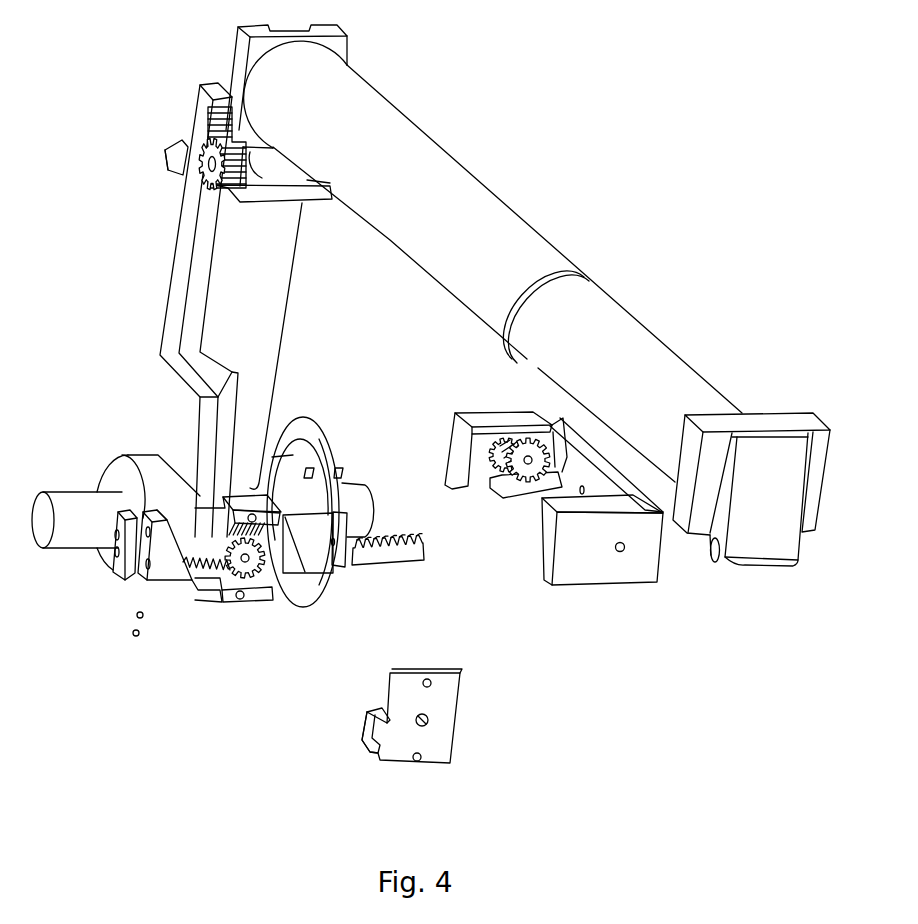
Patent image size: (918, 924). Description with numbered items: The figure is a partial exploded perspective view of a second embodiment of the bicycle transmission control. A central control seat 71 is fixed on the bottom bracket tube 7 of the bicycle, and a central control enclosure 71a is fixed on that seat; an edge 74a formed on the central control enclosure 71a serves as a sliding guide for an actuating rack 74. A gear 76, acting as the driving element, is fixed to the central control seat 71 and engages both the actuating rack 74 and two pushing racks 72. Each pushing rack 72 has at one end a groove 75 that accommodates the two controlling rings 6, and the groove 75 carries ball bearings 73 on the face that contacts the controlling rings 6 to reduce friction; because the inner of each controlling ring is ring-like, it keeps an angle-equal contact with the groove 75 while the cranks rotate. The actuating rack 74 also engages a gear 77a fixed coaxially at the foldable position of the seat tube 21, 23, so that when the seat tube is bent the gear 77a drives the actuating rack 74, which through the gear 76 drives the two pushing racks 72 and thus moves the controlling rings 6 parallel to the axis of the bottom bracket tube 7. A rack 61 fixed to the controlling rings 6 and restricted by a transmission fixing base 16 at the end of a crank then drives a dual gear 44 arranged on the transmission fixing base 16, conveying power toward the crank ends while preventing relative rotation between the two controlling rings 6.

The seat tube 21 is at (475, 208).
The seat tube 23 is at (265, 318).
The actuating rack 74 is at (183, 250).
The gear 77a is at (207, 150).
The controlling ring 6 is at (312, 430).
The bottom bracket tube 7 is at (148, 468).
The groove 75 is at (150, 567).
The ball bearings 73 is at (133, 633).
The pushing rack 72 is at (163, 567).
The central control seat 71 is at (259, 596).
The gear 76 is at (243, 567).
The rack 61 is at (398, 560).
The dual gear 44 is at (510, 470).
The transmission fixing base 16 is at (588, 565).
The central control enclosure 71a is at (452, 713).
The edge 74a is at (368, 722).